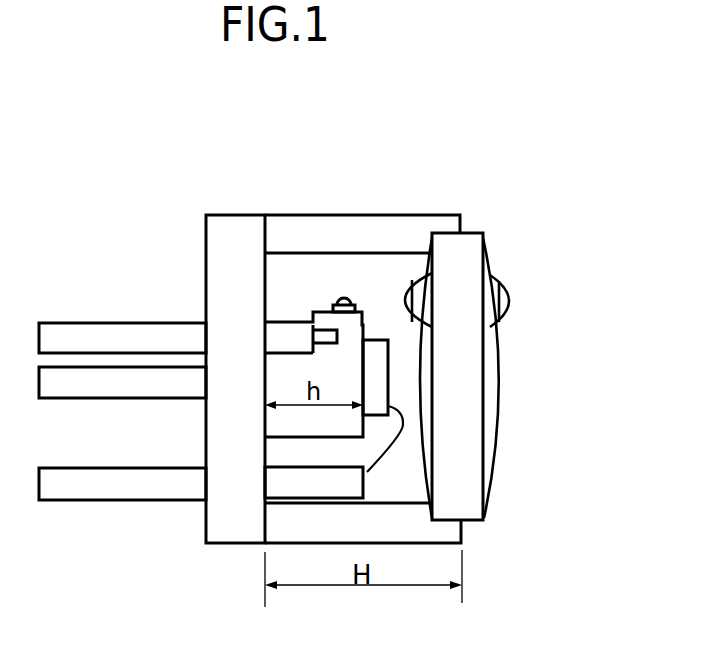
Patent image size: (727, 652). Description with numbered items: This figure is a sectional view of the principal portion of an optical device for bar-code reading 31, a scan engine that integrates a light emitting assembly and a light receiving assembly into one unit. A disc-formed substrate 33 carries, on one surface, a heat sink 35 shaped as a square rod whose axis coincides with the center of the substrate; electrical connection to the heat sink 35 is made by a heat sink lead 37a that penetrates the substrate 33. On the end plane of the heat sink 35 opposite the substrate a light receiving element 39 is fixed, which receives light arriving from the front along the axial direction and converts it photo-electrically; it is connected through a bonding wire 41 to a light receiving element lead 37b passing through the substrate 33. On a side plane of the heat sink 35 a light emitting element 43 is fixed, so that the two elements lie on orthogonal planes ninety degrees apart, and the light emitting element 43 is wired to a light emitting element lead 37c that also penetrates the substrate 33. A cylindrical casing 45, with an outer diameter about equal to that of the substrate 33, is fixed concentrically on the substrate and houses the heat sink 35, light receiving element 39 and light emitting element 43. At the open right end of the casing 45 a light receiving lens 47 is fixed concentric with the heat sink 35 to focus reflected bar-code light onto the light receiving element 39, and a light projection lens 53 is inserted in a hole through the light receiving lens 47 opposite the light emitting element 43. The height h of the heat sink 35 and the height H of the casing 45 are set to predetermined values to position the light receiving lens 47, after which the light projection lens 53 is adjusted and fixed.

The optical device for bar-code reading 31 is at (255, 169).
The substrate 33 is at (215, 243).
The heat sink 35 is at (295, 425).
The heat sink lead 37a is at (70, 398).
The light receiving element lead 37b is at (72, 500).
The light emitting element lead 37c is at (69, 323).
The light receiving element 39 is at (375, 340).
The bonding wire 41 is at (384, 452).
The light emitting element 43 is at (339, 297).
The casing 45 is at (463, 527).
The light receiving lens 47 is at (503, 450).
The light projection lens 53 is at (523, 276).